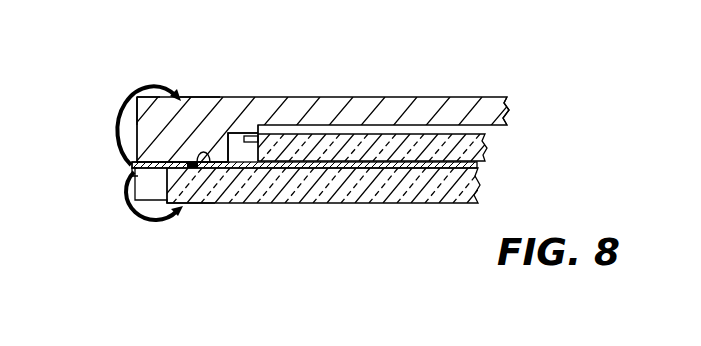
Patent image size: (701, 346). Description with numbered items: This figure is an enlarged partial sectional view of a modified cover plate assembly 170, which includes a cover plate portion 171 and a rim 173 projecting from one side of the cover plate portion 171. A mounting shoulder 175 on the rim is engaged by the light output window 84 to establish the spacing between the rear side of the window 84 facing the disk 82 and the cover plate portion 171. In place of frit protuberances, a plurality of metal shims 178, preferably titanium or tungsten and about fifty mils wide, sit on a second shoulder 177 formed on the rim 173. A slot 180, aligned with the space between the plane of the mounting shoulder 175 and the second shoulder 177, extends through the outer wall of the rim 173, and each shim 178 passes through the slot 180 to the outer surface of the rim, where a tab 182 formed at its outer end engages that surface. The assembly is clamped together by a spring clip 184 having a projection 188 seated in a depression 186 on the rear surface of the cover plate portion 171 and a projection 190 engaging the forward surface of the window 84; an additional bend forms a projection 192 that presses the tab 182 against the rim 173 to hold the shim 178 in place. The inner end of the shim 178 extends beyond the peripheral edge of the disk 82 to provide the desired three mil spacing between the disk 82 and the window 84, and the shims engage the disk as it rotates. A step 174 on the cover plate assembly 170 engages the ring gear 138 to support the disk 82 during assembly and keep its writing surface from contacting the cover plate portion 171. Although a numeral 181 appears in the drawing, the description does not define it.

The disk 82 is at (484, 158).
The light output window 84 is at (400, 203).
The ring gear 138 is at (251, 134).
The cover plate assembly 170 is at (302, 95).
The cover plate portion 171 is at (352, 102).
The rim 173 is at (130, 207).
The step 174 is at (235, 130).
The mounting shoulder 175 is at (195, 168).
The second shoulder 177 is at (207, 166).
The shim 178 is at (230, 168).
The slot 180 is at (142, 146).
The fastener 181 is at (198, 168).
The tab 182 is at (128, 170).
The spring clip 184 is at (120, 96).
The depression 186 is at (190, 95).
The projection 188 is at (173, 91).
The projection 190 is at (178, 220).
The projection 192 is at (124, 178).